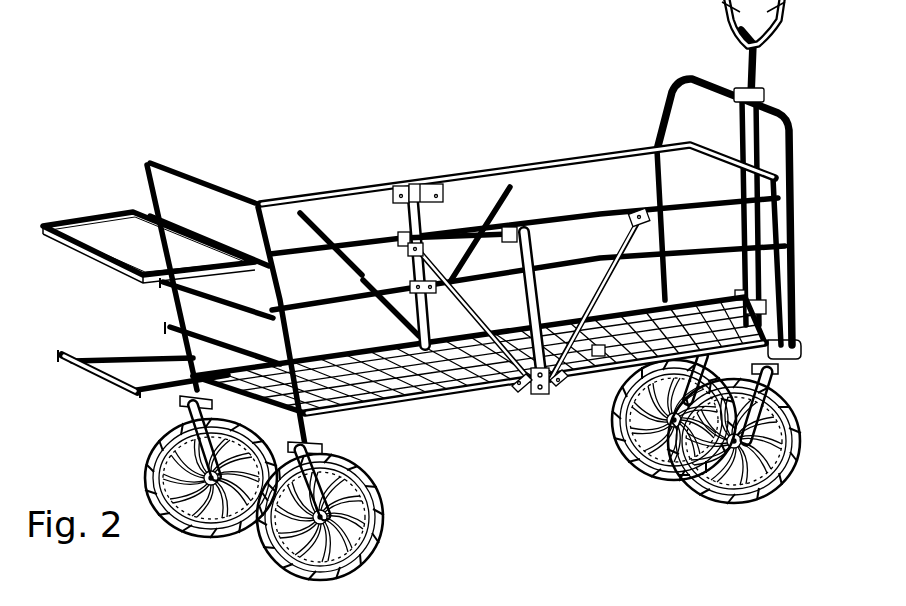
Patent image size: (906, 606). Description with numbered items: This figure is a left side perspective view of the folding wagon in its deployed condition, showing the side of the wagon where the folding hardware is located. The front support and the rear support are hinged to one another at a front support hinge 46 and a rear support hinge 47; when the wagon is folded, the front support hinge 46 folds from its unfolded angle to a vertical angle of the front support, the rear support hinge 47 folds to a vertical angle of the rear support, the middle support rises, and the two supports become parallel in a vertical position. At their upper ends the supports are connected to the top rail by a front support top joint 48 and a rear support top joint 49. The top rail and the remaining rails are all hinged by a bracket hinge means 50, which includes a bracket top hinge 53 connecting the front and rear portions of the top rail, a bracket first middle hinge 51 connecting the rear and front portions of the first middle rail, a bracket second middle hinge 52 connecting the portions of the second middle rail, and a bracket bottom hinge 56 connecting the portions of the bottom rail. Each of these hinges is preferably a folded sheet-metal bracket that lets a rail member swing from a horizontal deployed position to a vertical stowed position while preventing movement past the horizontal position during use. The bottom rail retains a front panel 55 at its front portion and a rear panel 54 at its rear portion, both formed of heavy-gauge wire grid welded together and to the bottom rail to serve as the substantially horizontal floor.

The front support hinge 46 is at (551, 387).
The rear support hinge 47 is at (519, 385).
The front support top joint 48 is at (633, 215).
The rear support top joint 49 is at (410, 247).
The bracket hinge means 50 is at (432, 185).
The bracket first middle hinge 51 is at (432, 237).
The bracket second middle hinge 52 is at (410, 285).
The bracket top hinge 53 is at (397, 188).
The rear panel 54 is at (472, 386).
The front panel 55 is at (604, 358).
The bracket bottom hinge 56 is at (537, 392).